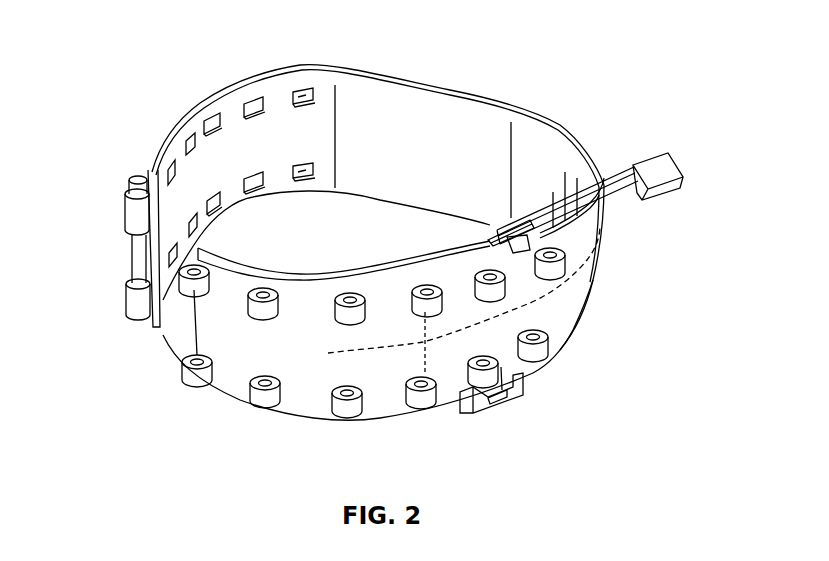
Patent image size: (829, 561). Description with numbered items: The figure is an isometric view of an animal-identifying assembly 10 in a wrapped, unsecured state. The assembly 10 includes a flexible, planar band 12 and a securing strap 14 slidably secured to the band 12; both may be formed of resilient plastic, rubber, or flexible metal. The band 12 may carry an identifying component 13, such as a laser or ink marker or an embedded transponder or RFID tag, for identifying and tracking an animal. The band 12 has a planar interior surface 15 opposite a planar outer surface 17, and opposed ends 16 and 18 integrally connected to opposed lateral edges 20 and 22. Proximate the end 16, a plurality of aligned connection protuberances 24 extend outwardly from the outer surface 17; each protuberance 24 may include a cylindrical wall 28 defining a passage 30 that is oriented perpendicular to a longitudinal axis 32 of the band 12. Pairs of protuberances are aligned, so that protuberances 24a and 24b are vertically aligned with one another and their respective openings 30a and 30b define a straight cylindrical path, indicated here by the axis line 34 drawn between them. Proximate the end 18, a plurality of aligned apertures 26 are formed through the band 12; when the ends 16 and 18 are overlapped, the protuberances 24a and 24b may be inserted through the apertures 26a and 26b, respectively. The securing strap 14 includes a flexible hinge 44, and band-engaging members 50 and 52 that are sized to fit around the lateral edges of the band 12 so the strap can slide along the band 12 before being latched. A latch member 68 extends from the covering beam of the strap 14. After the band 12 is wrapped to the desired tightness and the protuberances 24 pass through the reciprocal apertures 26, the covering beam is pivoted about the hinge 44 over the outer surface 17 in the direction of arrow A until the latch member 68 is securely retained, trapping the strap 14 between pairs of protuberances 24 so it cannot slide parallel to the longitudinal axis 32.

The animal-identifying assembly 10 is at (122, 64).
The band 12 is at (567, 122).
The identifying component 13 is at (473, 128).
The securing strap 14 is at (646, 157).
The interior surface 15 is at (427, 155).
The end 16 is at (193, 330).
The outer surface 17 is at (233, 377).
The end 18 is at (137, 262).
The lateral edge 20 is at (530, 108).
The lateral edge 22 is at (456, 410).
The connection protuberances 24 is at (350, 298).
The protuberance 24a is at (437, 307).
The protuberance 24b is at (421, 406).
The apertures 26 is at (300, 90).
The aperture 26a is at (190, 143).
The aperture 26b is at (191, 222).
The cylindrical wall 28 is at (282, 303).
The passage 30 is at (265, 293).
The opening 30a is at (427, 290).
The opening 30b is at (422, 382).
The longitudinal axis 32 is at (533, 303).
The alignment axis 34 is at (420, 334).
The flexible hinge 44 is at (510, 218).
The band-engaging member 50 is at (563, 265).
The band-engaging member 52 is at (500, 412).
The latch member 68 is at (683, 175).
The arrow A is at (667, 292).